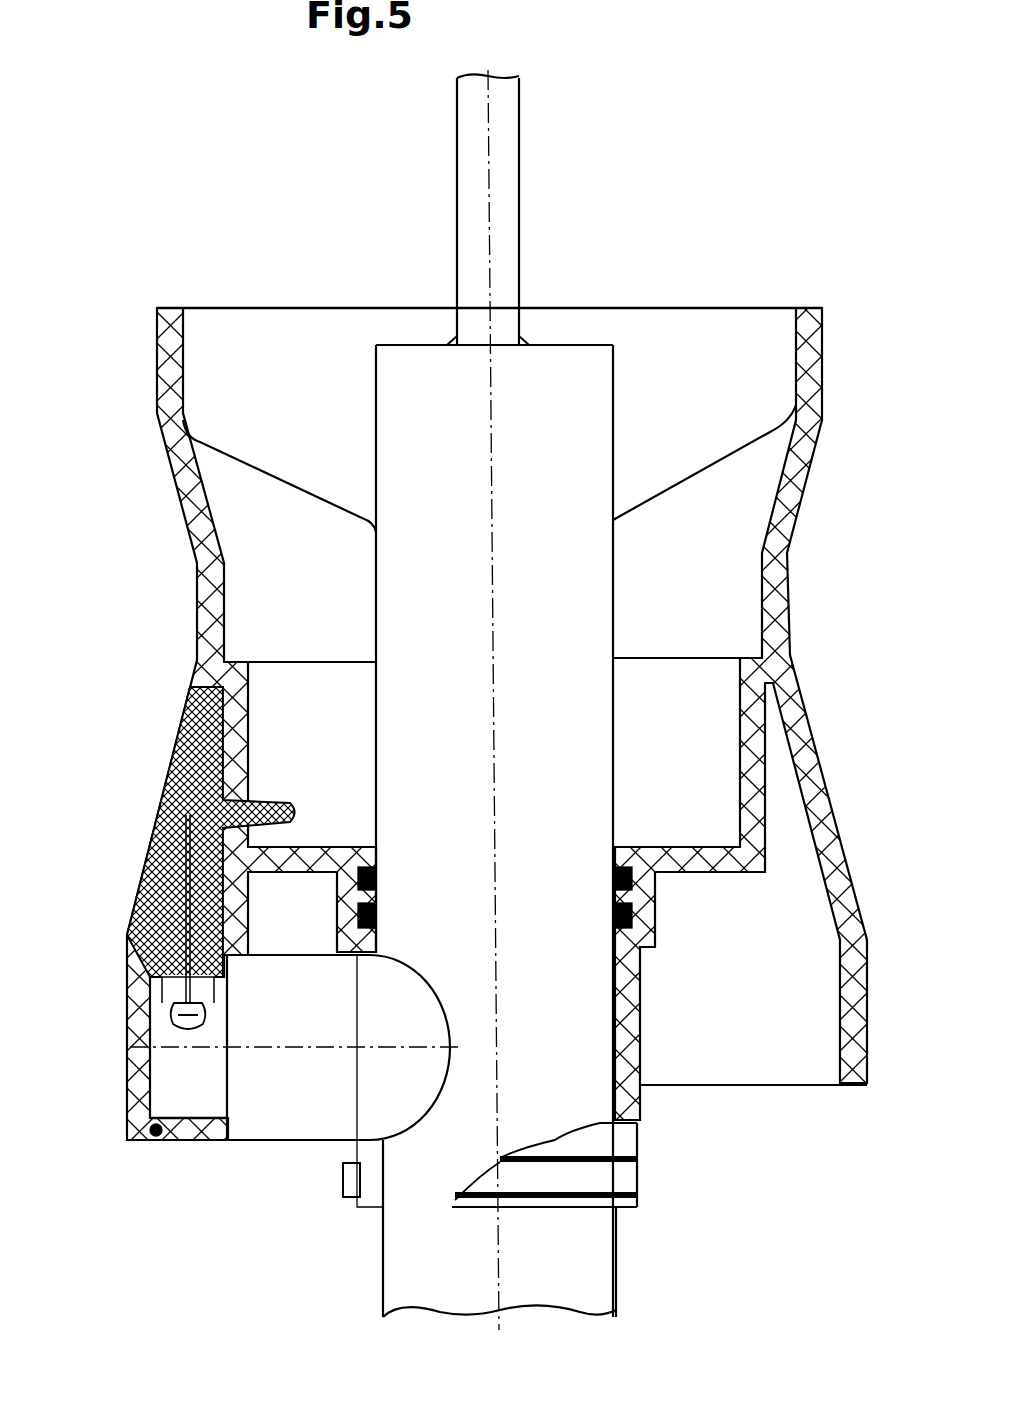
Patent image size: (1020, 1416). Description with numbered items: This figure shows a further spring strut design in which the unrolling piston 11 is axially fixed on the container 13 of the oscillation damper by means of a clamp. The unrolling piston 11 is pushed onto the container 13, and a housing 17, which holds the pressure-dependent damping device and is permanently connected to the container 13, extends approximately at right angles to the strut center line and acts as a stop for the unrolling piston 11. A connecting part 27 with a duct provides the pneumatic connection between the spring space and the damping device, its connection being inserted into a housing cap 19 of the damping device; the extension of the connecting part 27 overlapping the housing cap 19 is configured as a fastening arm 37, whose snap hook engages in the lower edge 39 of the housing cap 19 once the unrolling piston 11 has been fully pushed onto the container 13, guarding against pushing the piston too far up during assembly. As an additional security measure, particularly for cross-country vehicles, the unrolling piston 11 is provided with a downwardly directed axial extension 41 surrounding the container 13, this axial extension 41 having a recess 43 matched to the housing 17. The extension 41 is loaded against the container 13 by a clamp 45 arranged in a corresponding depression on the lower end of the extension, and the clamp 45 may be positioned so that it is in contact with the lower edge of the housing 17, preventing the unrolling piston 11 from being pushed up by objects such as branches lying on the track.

The unrolling piston 11 is at (812, 797).
The container 13 is at (590, 1277).
The housing 17 is at (150, 1025).
The housing cap 19 is at (165, 1088).
The connecting part 27 is at (143, 872).
The fastening arm 37 is at (158, 1140).
The lower edge 39 is at (193, 1112).
The axial extension 41 is at (620, 1145).
The recess 43 is at (367, 1148).
The clamp 45 is at (618, 1190).